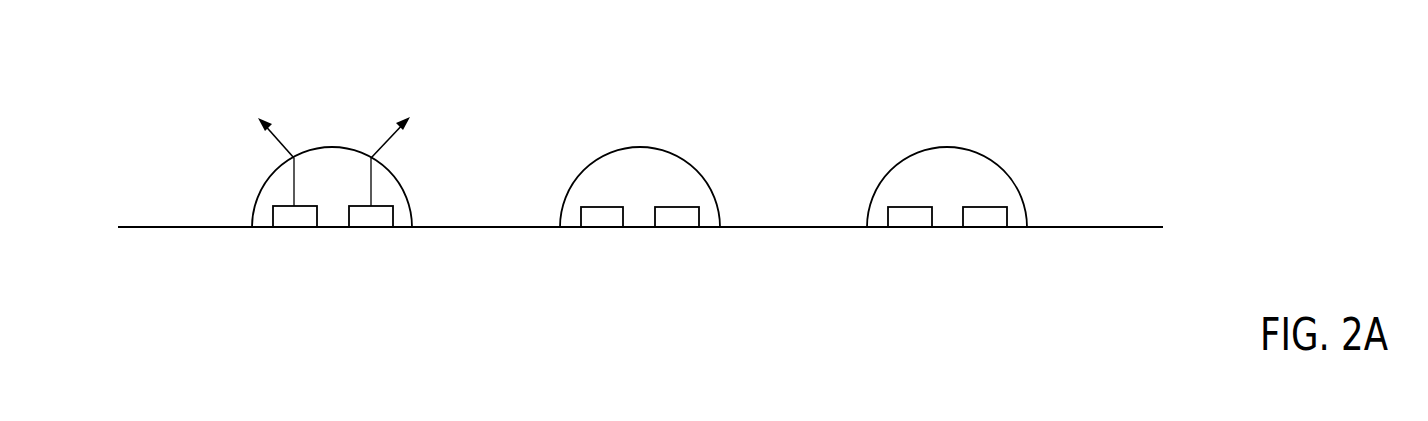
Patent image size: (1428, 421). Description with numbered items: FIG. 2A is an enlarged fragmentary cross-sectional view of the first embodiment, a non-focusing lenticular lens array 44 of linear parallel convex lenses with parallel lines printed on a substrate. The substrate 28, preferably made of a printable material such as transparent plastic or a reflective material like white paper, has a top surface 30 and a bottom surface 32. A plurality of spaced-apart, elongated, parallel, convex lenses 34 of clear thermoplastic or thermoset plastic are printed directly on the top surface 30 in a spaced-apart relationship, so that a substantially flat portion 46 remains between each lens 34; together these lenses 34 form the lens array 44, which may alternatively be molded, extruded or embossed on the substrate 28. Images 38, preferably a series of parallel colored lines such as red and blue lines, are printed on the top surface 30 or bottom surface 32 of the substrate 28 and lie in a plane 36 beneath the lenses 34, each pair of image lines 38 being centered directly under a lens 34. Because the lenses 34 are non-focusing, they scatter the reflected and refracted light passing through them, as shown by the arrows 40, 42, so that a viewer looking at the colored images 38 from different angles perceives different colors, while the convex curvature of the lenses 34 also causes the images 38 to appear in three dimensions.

The substrate 28 is at (1097, 227).
The top surface 30 is at (187, 227).
The bottom surface 32 is at (1025, 227).
The convex lens 34 is at (333, 147).
The plane 36 is at (1170, 220).
The images 38 is at (668, 217).
The arrow 40 is at (281, 141).
The arrow 42 is at (388, 142).
The non-focusing lenticular lens array 44 is at (756, 227).
The substantially flat portion 46 is at (488, 227).